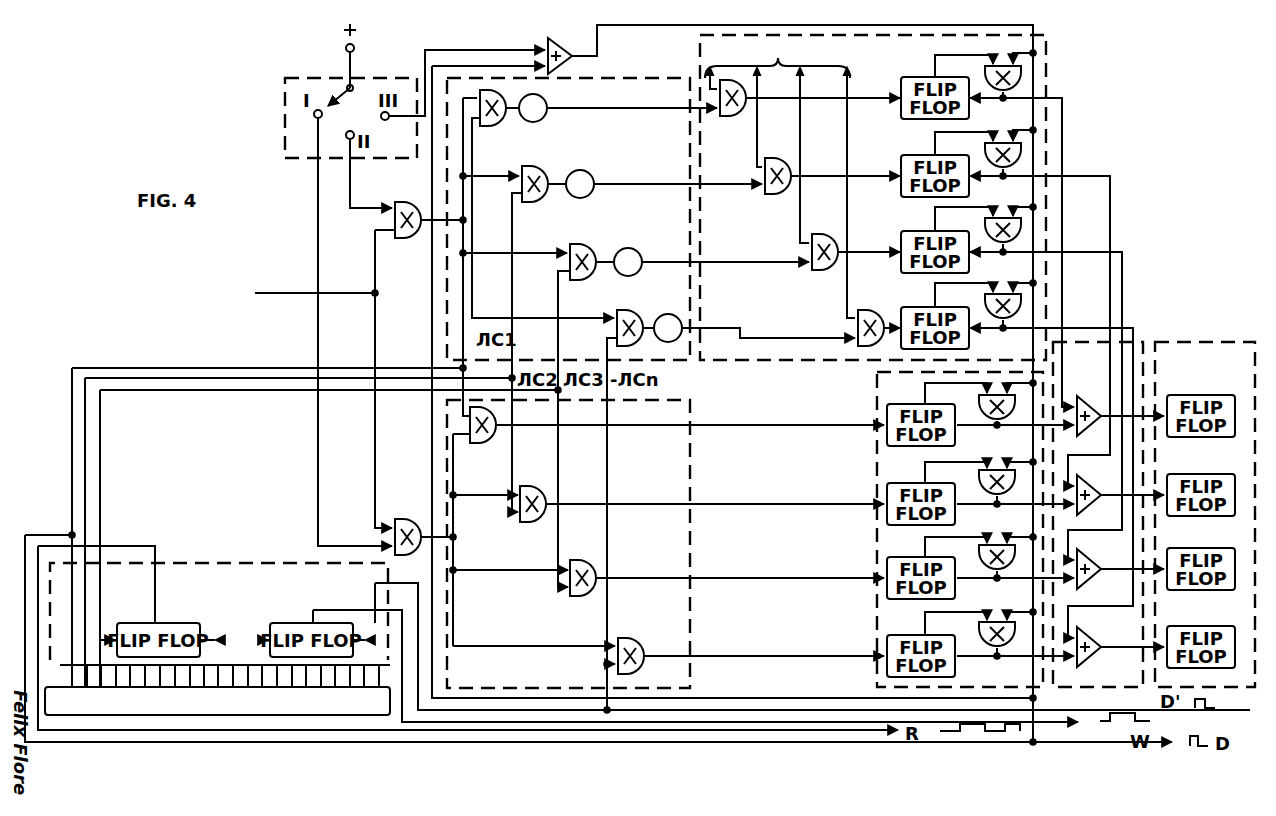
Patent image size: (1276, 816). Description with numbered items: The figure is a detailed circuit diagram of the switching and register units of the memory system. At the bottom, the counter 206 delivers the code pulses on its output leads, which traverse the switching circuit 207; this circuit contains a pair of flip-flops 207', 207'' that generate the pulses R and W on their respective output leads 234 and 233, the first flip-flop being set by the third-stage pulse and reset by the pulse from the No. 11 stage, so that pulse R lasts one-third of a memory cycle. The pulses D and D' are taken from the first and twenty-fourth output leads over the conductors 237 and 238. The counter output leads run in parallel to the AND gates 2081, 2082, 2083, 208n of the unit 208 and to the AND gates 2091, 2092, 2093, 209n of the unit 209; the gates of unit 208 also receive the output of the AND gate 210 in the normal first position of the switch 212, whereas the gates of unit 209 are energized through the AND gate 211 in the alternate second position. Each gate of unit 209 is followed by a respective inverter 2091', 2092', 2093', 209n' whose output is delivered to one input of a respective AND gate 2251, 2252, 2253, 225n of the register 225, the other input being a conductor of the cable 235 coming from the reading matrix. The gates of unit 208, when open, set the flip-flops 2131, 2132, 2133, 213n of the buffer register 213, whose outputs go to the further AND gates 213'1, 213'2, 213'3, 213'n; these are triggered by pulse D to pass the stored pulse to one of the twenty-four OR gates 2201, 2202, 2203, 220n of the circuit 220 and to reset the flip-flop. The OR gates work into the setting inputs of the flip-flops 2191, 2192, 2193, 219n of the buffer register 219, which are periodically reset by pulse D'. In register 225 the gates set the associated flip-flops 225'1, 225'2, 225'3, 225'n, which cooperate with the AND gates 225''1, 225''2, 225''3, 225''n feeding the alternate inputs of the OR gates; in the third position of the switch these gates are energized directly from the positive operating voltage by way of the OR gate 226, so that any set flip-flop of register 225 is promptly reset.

The No. 11 stage of counter 11 is at (265, 293).
The counter 206 is at (262, 690).
The switching circuit 207 is at (219, 599).
The flip-flop 207' is at (171, 625).
The flip-flop 207'' is at (311, 625).
The unit of AND gates 208 is at (447, 458).
The AND gate 2081 is at (493, 442).
The AND gate 2082 is at (533, 520).
The AND gate 2083 is at (568, 592).
The AND gate 208n is at (655, 662).
The unit of AND gates 209 is at (447, 270).
The AND gate 2091 is at (513, 119).
The AND gate 2092 is at (557, 192).
The AND gate 2093 is at (600, 275).
The AND gate 209n is at (605, 334).
The inverter 2091' is at (568, 98).
The inverter 2092' is at (613, 167).
The inverter 2093' is at (647, 245).
The inverter 209n' is at (671, 309).
The AND gate 210 is at (403, 518).
The AND gate 211 is at (415, 206).
The switch 212 is at (285, 95).
The buffer register 213 is at (929, 529).
The flip-flop 2131 is at (917, 413).
The flip-flop 2132 is at (917, 492).
The flip-flop 2133 is at (918, 566).
The flip-flop 213n is at (917, 644).
The AND gate 213'1 is at (976, 396).
The AND gate 213'2 is at (1003, 462).
The AND gate 213'3 is at (1003, 537).
The AND gate 213'n is at (1003, 614).
The buffer register 219 is at (1186, 342).
The flip-flop 2191 is at (1201, 405).
The flip-flop 2192 is at (1201, 484).
The flip-flop 2193 is at (1201, 558).
The flip-flop 219n is at (1201, 636).
The circuit of OR gates 220 is at (1145, 342).
The OR gate 2201 is at (1103, 409).
The OR gate 2202 is at (1104, 487).
The OR gate 2203 is at (1105, 562).
The OR gate 220n is at (1105, 640).
The register 225 is at (900, 197).
The AND gate 2251 is at (739, 113).
The AND gate 2252 is at (775, 190).
The AND gate 2253 is at (812, 267).
The AND gate 225n is at (845, 328).
The flip-flop 225'1 is at (924, 85).
The flip-flop 225'2 is at (927, 162).
The flip-flop 225'3 is at (927, 239).
The flip-flop 225'n is at (932, 315).
The AND gate 225''1 is at (1051, 82).
The AND gate 225''2 is at (1014, 133).
The AND gate 225''3 is at (1014, 208).
The AND gate 225''n is at (1014, 285).
The OR gate 226 is at (573, 46).
The output lead 233 is at (752, 722).
The output lead 234 is at (812, 730).
The cable 235 is at (780, 179).
The conductor 237 is at (44, 535).
The conductor 238 is at (695, 710).